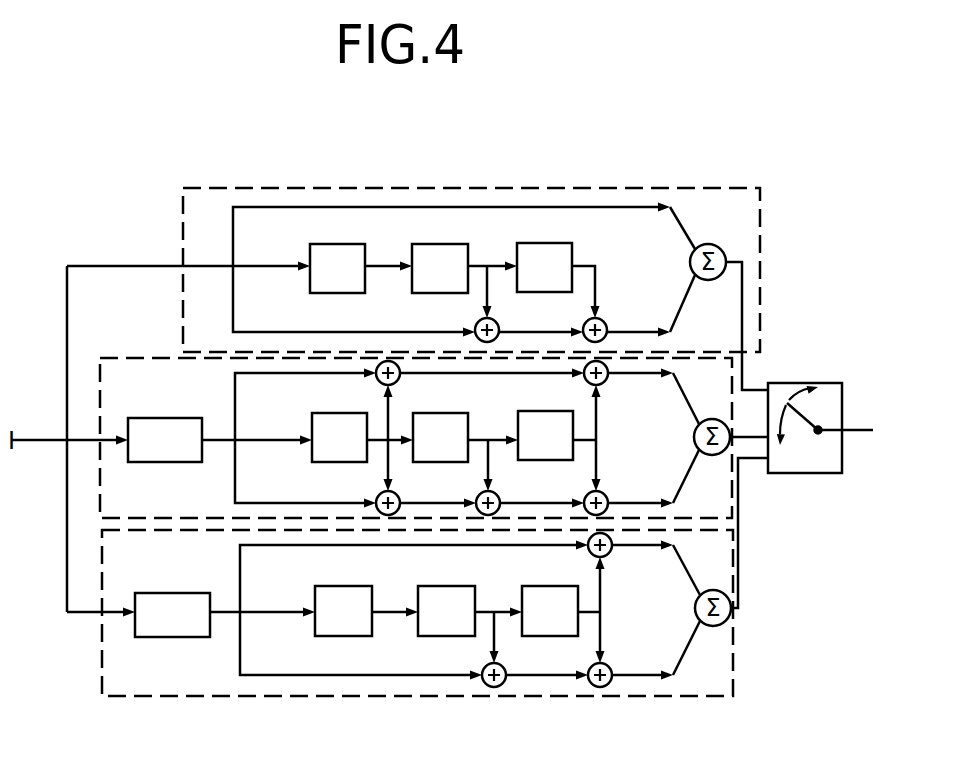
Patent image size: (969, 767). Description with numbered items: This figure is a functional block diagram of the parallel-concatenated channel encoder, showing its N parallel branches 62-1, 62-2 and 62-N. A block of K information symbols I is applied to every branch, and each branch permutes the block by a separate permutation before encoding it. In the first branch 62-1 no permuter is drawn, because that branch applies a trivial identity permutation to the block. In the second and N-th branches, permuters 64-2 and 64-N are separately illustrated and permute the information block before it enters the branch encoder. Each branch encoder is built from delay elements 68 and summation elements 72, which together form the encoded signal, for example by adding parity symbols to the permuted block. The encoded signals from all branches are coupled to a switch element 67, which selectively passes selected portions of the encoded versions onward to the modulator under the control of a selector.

The branch 62-1 is at (220, 188).
The branch 62-2 is at (118, 358).
The branch 62-N is at (120, 697).
The permuter 64-2 is at (150, 418).
The permuter 64-N is at (158, 593).
The switch element 67 is at (792, 383).
The delay element 68 is at (332, 244).
The summation element 72 is at (380, 366).